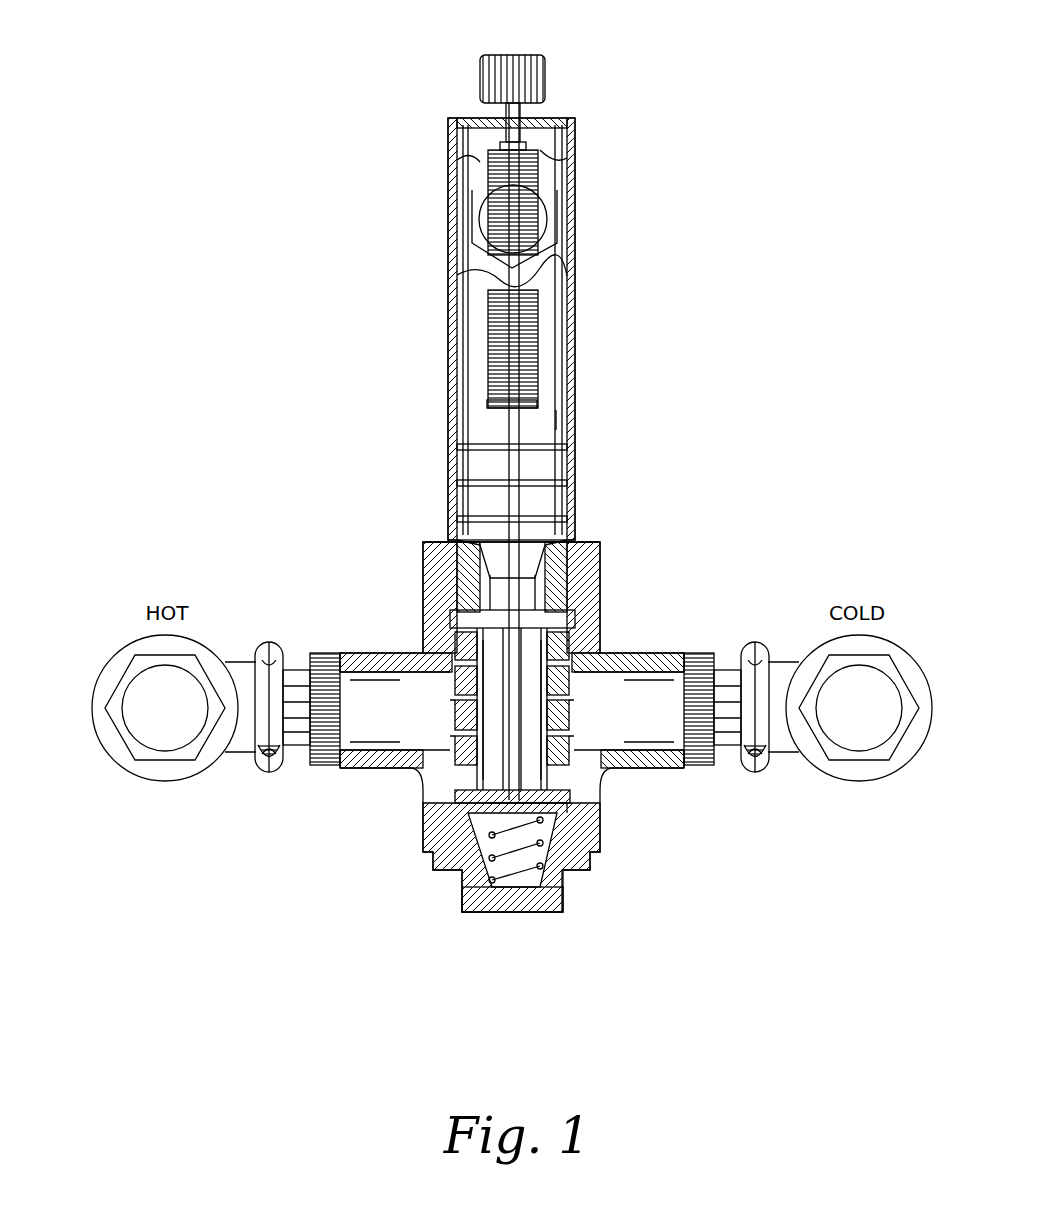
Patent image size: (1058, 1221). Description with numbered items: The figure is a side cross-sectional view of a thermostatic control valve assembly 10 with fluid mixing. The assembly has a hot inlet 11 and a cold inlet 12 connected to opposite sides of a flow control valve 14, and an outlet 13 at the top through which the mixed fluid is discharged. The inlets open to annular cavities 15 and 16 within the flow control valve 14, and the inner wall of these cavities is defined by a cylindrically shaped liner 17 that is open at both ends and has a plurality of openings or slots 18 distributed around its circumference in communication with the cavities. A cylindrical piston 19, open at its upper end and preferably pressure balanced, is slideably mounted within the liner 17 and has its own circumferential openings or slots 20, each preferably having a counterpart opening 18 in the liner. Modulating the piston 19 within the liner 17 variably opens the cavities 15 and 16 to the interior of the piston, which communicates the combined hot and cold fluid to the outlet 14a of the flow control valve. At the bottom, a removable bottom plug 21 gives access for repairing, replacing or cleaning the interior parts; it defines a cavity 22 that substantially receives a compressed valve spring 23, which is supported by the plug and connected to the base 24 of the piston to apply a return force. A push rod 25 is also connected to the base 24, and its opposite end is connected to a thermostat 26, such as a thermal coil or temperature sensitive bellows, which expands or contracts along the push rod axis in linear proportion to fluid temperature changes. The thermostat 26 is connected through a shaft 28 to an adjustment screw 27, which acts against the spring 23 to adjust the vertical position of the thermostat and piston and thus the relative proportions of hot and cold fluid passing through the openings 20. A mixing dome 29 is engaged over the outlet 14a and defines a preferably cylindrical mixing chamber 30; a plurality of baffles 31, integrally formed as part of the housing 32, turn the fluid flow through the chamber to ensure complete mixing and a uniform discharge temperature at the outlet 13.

The thermostatic control valve assembly 10 is at (318, 511).
The hot inlet 11 is at (167, 735).
The cold inlet 12 is at (858, 735).
The outlet 13 is at (488, 236).
The flow control valve 14 is at (632, 842).
The outlet of the flow control valve 14a is at (568, 590).
The annular cavity 15 is at (362, 732).
The annular cavity 16 is at (445, 662).
The liner 17 is at (455, 600).
The openings or slots 18 is at (462, 714).
The piston 19 is at (492, 770).
The openings or slots 20 is at (456, 688).
The bottom plug 21 is at (565, 905).
The cavity 22 is at (490, 862).
The valve spring 23 is at (500, 882).
The base of piston 24 is at (528, 745).
The push rod 25 is at (505, 545).
The thermostat 26 is at (490, 340).
The adjustment screw 27 is at (547, 78).
The shaft 28 is at (488, 160).
The mixing dome 29 is at (625, 295).
The mixing chamber 30 is at (548, 410).
The baffles 31 is at (553, 519).
The housing 32 is at (578, 358).